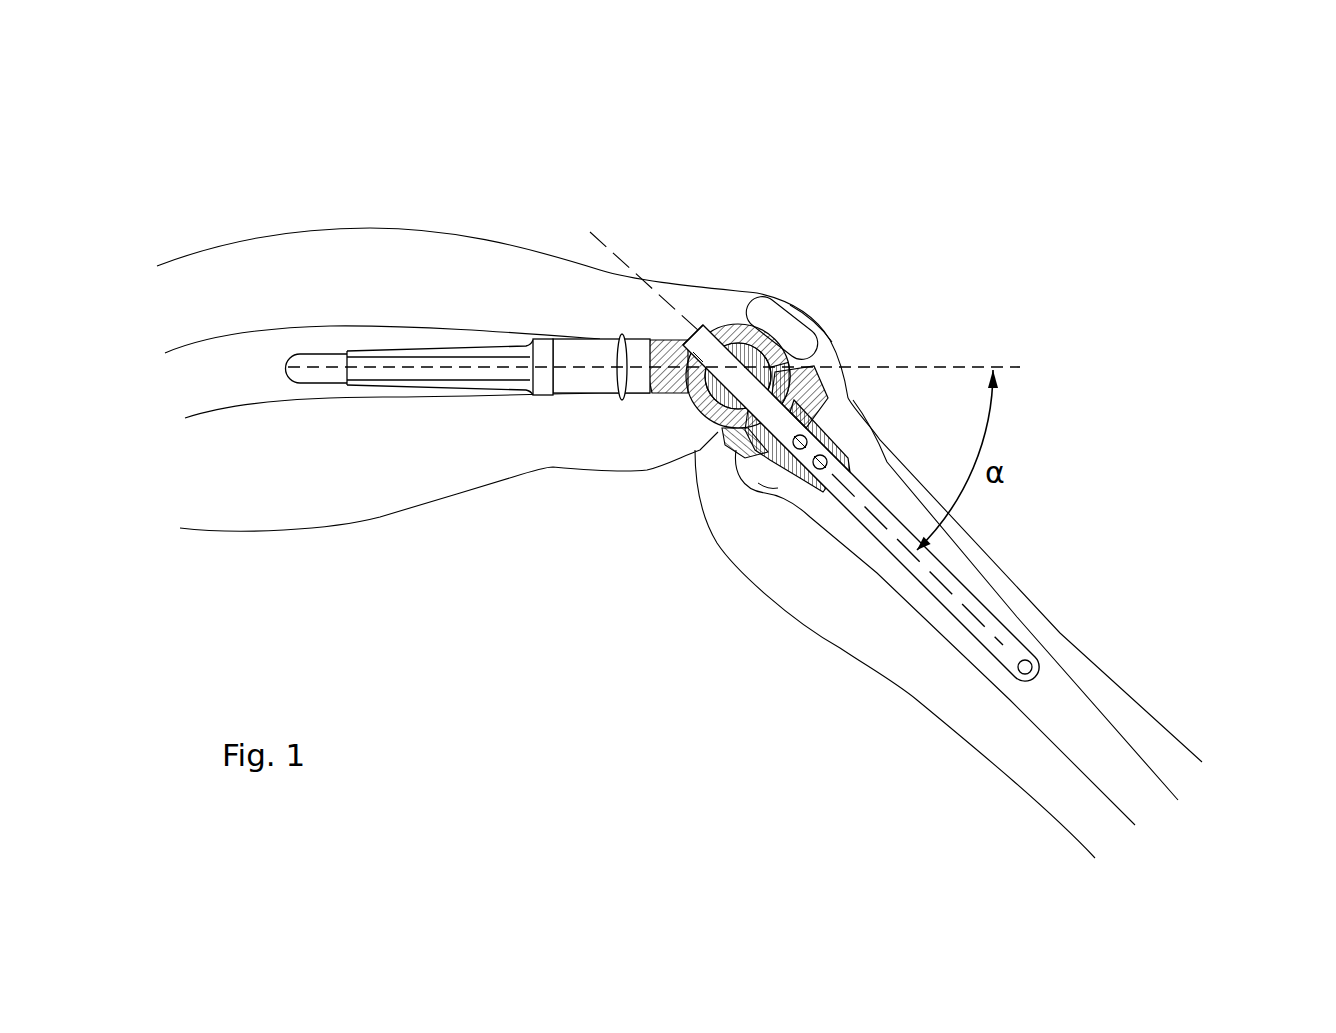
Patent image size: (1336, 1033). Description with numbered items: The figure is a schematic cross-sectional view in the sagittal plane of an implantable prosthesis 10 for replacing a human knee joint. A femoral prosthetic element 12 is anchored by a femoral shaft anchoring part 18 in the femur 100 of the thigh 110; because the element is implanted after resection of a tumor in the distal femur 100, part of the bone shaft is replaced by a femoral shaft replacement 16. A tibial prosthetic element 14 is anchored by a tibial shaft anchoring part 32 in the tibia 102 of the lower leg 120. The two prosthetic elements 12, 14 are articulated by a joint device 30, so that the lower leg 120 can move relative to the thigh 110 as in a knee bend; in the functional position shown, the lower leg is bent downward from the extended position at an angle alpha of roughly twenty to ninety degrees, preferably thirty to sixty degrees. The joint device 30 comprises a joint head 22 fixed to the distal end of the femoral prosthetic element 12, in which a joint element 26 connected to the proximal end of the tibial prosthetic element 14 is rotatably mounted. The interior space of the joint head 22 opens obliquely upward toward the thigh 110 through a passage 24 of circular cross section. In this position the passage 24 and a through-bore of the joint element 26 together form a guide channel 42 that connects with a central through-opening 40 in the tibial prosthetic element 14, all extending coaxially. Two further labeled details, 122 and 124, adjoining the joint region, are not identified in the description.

The implantable prosthesis 10 is at (633, 182).
The femoral prosthetic element 12 is at (558, 327).
The tibial prosthetic element 14 is at (813, 393).
The femoral shaft replacement 16 is at (608, 372).
The femoral shaft anchoring part 18 is at (407, 367).
The joint head 22 is at (732, 325).
The passage 24 is at (700, 350).
The joint element 26 is at (725, 398).
The joint device 30 is at (807, 334).
The tibial shaft anchoring part 32 is at (950, 584).
The central through-opening 40 is at (790, 417).
The guide channel 42 is at (708, 320).
The femur 100 is at (232, 355).
The tibia 102 is at (1068, 715).
The thigh 110 is at (296, 227).
The lower leg 120 is at (1075, 625).
The socket portion 122 is at (767, 347).
The socket portion 124 is at (807, 334).